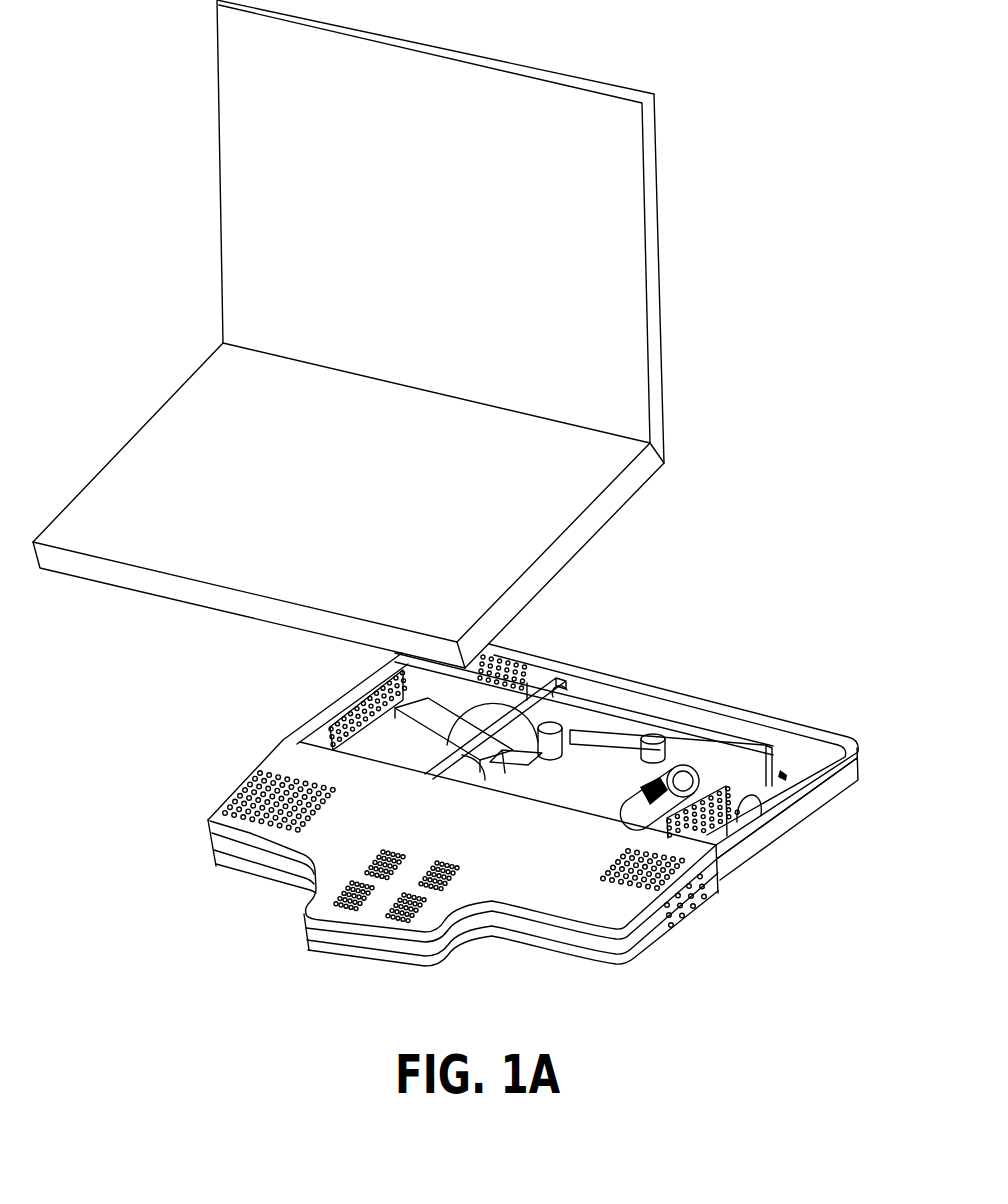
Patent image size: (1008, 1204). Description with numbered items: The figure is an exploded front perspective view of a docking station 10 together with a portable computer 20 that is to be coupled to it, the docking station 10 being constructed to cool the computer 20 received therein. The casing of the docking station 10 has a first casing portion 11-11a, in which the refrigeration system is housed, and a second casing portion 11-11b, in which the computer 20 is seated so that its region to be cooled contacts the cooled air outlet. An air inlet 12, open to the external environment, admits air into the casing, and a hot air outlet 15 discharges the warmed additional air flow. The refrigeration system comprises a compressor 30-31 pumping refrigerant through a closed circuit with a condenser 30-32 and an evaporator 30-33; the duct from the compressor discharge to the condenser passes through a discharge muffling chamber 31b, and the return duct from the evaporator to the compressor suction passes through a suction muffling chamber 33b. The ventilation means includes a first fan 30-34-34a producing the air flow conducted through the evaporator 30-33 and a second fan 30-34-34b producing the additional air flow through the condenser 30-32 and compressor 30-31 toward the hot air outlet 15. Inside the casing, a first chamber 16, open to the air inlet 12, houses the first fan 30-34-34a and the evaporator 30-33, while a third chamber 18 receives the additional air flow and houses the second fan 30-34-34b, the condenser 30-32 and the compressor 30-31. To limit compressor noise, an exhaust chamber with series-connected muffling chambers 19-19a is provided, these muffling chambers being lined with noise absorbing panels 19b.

The docking station 10 is at (752, 888).
The computer 20 is at (205, 278).
The air inlet 12 is at (328, 748).
The first casing portion 11-11a is at (320, 708).
The second casing portion 11-11b is at (592, 960).
The hot air outlet 15 is at (527, 683).
The first chamber 16 is at (413, 710).
The third chamber 18 is at (523, 705).
The noise absorbing panels 19b is at (494, 741).
The exhaust chamber with muffling chambers 19-19a is at (792, 753).
The compressor of the refrigeration system 30-31 is at (697, 775).
The condenser of the refrigeration system 30-32 is at (597, 752).
The evaporator of the refrigeration system 30-33 is at (389, 745).
The first fan of the ventilation means 30-34-34a is at (453, 706).
The second fan of the ventilation means 30-34-34b is at (484, 740).
The discharge muffling chamber 31b is at (567, 722).
The suction muffling chamber 33b is at (647, 728).